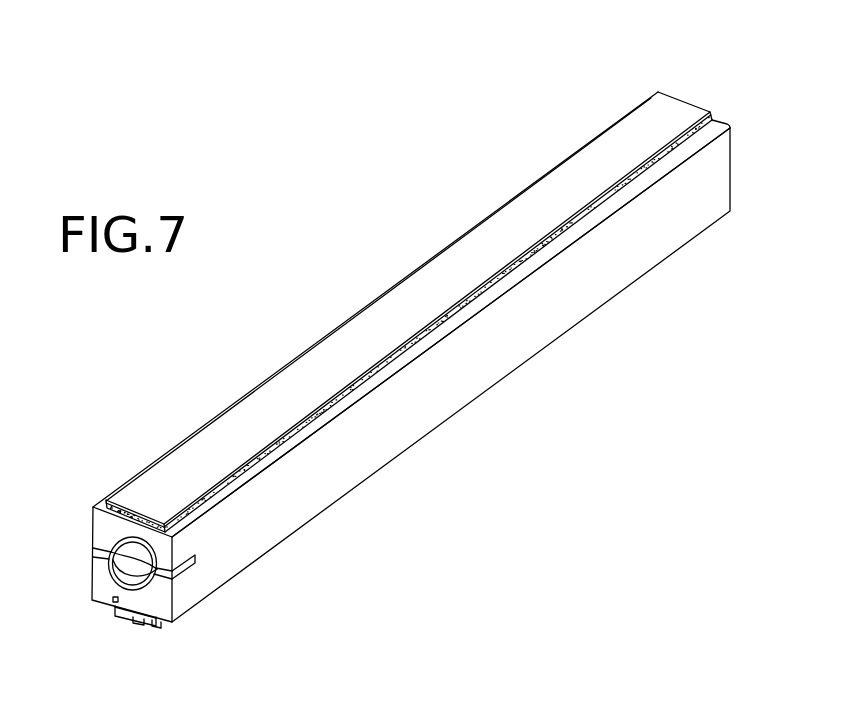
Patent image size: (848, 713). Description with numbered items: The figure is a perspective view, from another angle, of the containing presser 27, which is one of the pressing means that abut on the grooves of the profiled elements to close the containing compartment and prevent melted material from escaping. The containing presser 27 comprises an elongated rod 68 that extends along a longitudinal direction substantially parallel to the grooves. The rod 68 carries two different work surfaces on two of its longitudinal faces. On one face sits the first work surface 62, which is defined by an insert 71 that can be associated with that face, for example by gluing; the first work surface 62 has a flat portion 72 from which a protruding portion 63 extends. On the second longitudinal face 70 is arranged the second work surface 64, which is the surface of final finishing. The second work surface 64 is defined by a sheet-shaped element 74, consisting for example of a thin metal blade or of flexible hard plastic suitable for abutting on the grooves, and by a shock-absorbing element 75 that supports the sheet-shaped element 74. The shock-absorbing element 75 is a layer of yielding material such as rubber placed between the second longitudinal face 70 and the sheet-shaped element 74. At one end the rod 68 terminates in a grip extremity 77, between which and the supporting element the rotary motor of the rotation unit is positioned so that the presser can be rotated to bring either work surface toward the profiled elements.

The containing presser 27 is at (413, 361).
The first work surface 62 is at (102, 607).
The protruding portion 63 is at (136, 624).
The second work surface 64 is at (457, 282).
The rod 68 is at (626, 239).
The second longitudinal face 70 is at (368, 391).
The insert 71 is at (120, 607).
The flat portion 72 is at (159, 625).
The sheet-shaped element 74 is at (585, 167).
The shock-absorbing element 75 is at (672, 148).
The grip extremity 77 is at (110, 550).